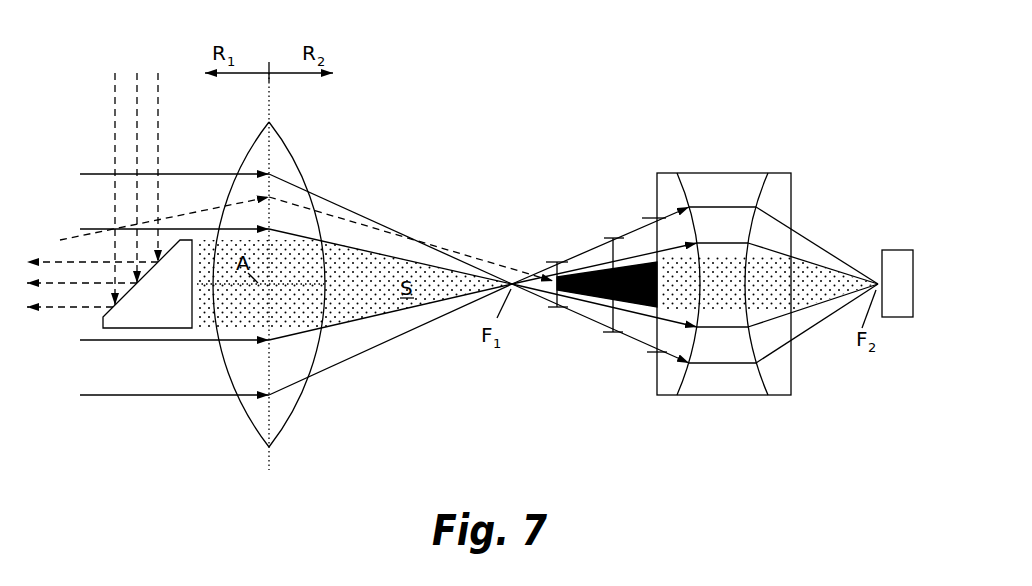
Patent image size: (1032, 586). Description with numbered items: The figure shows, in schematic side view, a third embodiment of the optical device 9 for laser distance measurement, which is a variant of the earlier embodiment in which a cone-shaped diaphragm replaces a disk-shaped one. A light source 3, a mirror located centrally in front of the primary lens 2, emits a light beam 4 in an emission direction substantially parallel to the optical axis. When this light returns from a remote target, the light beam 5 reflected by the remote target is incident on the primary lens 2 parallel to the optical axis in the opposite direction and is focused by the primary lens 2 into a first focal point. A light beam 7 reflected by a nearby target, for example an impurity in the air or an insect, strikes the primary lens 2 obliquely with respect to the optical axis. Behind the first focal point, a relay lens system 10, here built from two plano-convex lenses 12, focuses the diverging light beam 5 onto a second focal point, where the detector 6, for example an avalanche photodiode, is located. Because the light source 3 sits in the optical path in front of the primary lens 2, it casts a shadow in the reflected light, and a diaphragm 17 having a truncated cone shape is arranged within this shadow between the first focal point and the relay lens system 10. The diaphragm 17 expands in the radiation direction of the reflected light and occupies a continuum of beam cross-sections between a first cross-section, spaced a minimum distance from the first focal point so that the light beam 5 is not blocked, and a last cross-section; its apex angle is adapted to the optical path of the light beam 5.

The primary lens 2 is at (283, 156).
The light source 3 is at (170, 309).
The emitted light beam 4 is at (68, 262).
The light beam reflected by the remote target 5 is at (192, 397).
The detector 6 is at (900, 252).
The light beam reflected by the nearby target 7 is at (478, 257).
The optical device 9 is at (826, 46).
The relay lens system 10 is at (747, 119).
The plano-convex lenses 12 is at (673, 178).
The diaphragm 17 is at (583, 297).